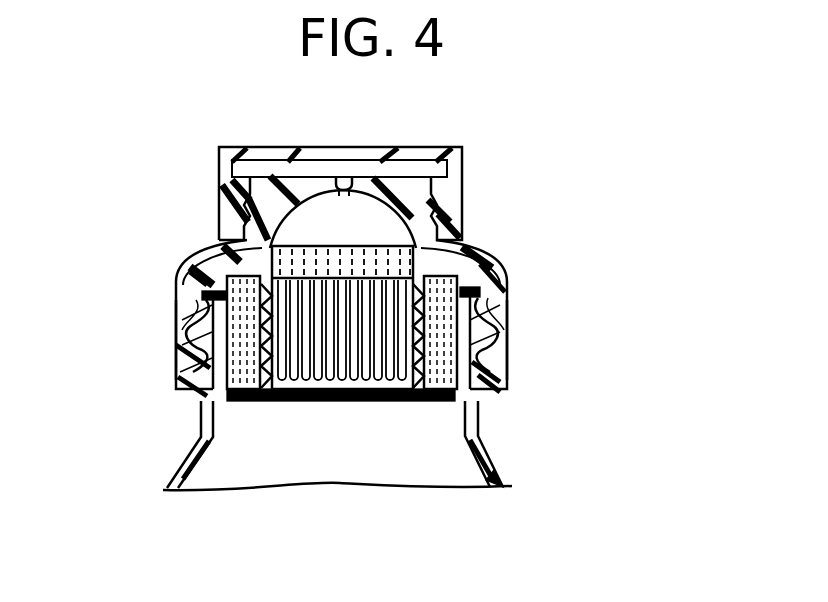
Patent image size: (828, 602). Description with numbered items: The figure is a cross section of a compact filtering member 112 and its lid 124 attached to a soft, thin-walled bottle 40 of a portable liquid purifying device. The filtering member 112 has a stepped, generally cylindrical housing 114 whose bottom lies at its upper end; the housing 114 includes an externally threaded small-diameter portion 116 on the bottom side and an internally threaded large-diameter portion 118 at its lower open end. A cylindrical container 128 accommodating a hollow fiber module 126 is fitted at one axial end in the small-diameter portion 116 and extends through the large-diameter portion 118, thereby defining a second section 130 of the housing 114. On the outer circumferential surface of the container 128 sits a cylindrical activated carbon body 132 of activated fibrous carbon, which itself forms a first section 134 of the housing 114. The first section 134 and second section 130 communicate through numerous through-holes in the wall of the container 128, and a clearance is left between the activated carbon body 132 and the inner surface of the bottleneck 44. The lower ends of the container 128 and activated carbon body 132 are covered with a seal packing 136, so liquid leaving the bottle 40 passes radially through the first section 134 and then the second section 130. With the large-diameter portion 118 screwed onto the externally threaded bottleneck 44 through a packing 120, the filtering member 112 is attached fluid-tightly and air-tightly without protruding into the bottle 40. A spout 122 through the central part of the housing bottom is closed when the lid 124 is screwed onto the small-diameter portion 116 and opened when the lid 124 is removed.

The lid 124 is at (213, 183).
The spout 122 is at (355, 187).
The small-diameter portion 116 is at (412, 217).
The filtering member 112 is at (538, 258).
The housing 114 is at (512, 322).
The large-diameter portion 118 is at (496, 345).
The second section 130 is at (434, 358).
The bottle 40 is at (504, 471).
The packing 120 is at (203, 293).
The bottleneck 44 is at (198, 330).
The first section 134 is at (227, 359).
The activated carbon body 132 is at (234, 389).
The container 128 is at (267, 401).
The hollow fiber module 126 is at (330, 401).
The seal packing 136 is at (408, 401).